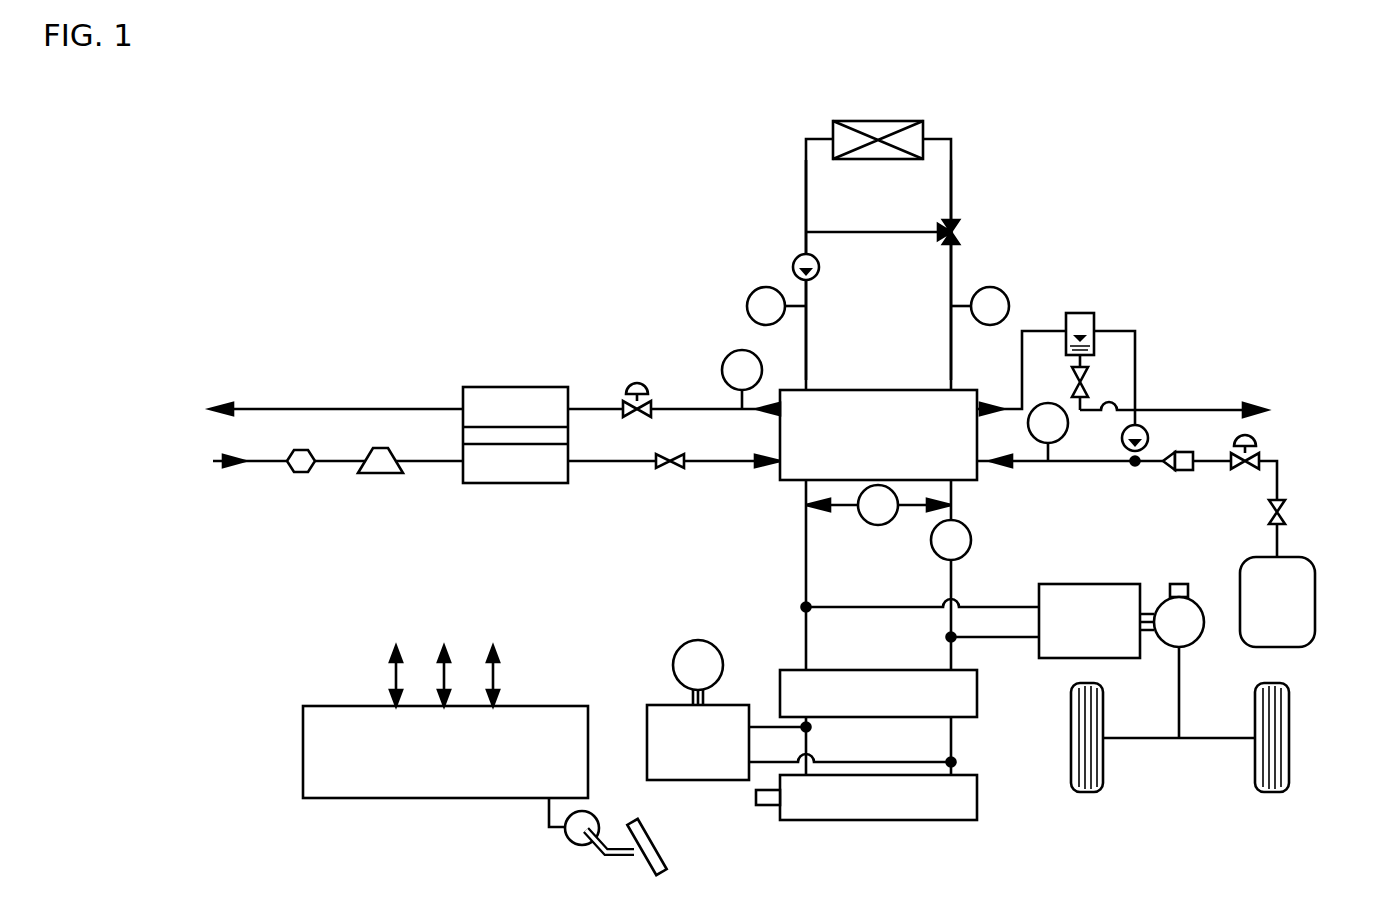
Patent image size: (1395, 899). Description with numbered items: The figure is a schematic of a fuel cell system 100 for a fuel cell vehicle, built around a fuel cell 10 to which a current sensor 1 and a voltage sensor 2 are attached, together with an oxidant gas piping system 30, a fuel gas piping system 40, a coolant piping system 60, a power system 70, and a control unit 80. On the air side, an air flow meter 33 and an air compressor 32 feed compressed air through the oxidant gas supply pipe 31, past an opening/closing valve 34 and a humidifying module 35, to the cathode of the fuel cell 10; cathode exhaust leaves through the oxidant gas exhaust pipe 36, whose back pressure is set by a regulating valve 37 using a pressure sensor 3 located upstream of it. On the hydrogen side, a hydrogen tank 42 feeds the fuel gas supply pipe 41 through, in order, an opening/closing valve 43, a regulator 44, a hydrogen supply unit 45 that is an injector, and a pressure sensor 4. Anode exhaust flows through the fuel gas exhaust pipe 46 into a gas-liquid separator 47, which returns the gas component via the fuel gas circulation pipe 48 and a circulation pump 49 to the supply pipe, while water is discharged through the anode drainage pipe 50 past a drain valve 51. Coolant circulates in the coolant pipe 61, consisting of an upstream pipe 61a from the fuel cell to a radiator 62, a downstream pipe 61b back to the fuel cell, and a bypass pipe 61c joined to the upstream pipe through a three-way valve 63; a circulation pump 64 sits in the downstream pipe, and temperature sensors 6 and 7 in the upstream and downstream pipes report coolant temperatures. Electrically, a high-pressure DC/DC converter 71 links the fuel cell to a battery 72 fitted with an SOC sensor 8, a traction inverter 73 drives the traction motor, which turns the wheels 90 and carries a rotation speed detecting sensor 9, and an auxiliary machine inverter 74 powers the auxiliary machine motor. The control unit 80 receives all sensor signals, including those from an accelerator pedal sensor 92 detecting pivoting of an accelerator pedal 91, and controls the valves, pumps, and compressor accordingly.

The fuel cell system 100 is at (800, 451).
The fuel cell 10 is at (878, 410).
The current sensor 1 is at (973, 538).
The voltage sensor 2 is at (878, 534).
The pressure sensor 3 is at (727, 362).
The pressure sensor 4 is at (1048, 408).
The temperature sensor 6 is at (980, 285).
The temperature sensor 7 is at (762, 293).
The SOC sensor 8 is at (767, 827).
The rotation speed detecting sensor 9 is at (1175, 569).
The oxidant gas piping system 30 is at (495, 421).
The oxidant gas supply pipe 31 is at (496, 492).
The air compressor 32 is at (380, 493).
The air flow meter 33 is at (301, 494).
The opening/closing valve 34 is at (671, 496).
The humidifying module 35 is at (515, 472).
The oxidant gas exhaust pipe 36 is at (495, 388).
The regulating valve 37 is at (637, 376).
The fuel gas piping system 40 is at (1175, 439).
The fuel gas supply pipe 41 is at (1070, 492).
The hydrogen tank 42 is at (1315, 602).
The opening/closing valve 43 is at (1307, 528).
The regulator 44 is at (1271, 460).
The hydrogen supply unit 45 is at (1197, 490).
The fuel gas exhaust pipe 46 is at (1013, 373).
The gas-liquid separator 47 is at (1086, 308).
The fuel gas circulation pipe 48 is at (1140, 378).
The circulation pump 49 is at (1159, 437).
The anode drainage pipe 50 is at (1173, 383).
The drain valve 51 is at (1098, 378).
The coolant piping system 60 is at (874, 223).
The coolant pipe 61 is at (864, 233).
The upstream pipe 61a is at (989, 260).
The downstream pipe 61b is at (764, 270).
The bypass pipe 61c is at (873, 206).
The radiator 62 is at (879, 109).
The three-way valve 63 is at (974, 227).
The circulation pump 64 is at (782, 253).
The power system 70 is at (967, 682).
The high-pressure DC/DC converter 71 is at (878, 669).
The battery 72 is at (878, 829).
The traction inverter 73 is at (1096, 597).
The auxiliary machine inverter 74 is at (697, 717).
The control unit 80 is at (444, 736).
The wheels 90 is at (1173, 766).
The accelerator pedal 91 is at (659, 835).
The accelerator pedal sensor 92 is at (601, 811).